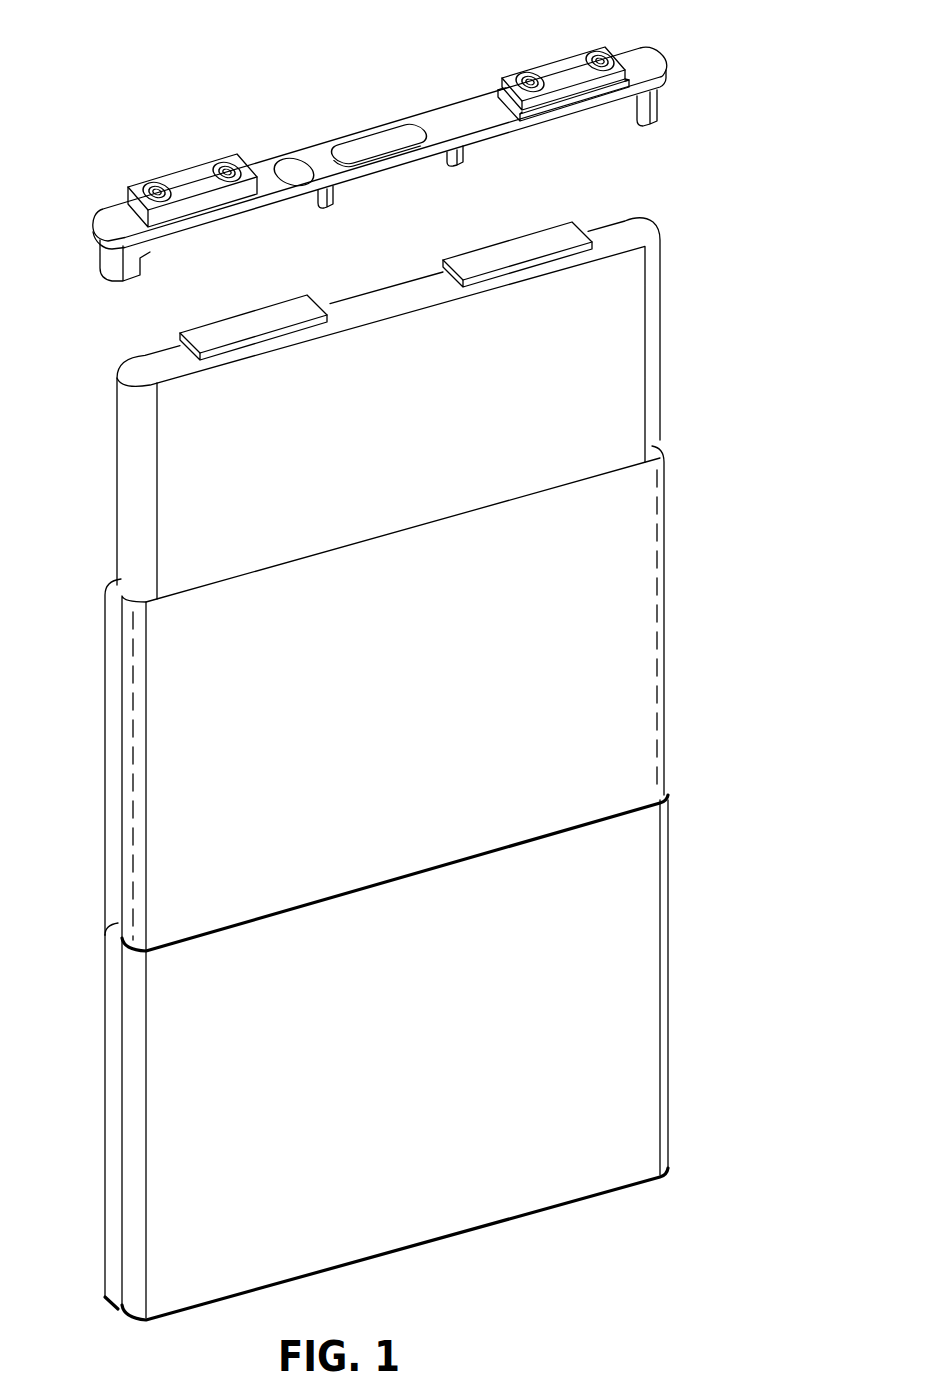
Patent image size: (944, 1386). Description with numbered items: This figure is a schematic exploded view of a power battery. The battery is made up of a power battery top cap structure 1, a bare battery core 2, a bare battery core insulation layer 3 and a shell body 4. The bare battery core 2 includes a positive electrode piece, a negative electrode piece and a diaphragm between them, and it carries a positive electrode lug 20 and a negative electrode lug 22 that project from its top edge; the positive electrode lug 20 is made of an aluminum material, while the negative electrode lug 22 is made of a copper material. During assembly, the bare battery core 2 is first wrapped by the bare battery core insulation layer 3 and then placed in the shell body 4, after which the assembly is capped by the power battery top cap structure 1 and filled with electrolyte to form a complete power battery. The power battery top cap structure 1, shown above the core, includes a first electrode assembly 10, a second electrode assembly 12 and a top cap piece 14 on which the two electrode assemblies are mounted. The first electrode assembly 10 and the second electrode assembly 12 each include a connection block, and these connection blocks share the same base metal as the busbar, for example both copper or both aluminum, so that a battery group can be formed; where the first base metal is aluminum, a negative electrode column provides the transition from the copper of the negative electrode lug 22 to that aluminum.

The power battery top cap structure 1 is at (363, 140).
The bare battery core 2 is at (132, 512).
The bare battery core insulation layer 3 is at (132, 830).
The shell body 4 is at (118, 1147).
The first electrode assembly 10 is at (562, 67).
The second electrode assembly 12 is at (187, 182).
The top cap piece 14 is at (435, 115).
The positive electrode lug 20 is at (225, 327).
The negative electrode lug 22 is at (503, 253).